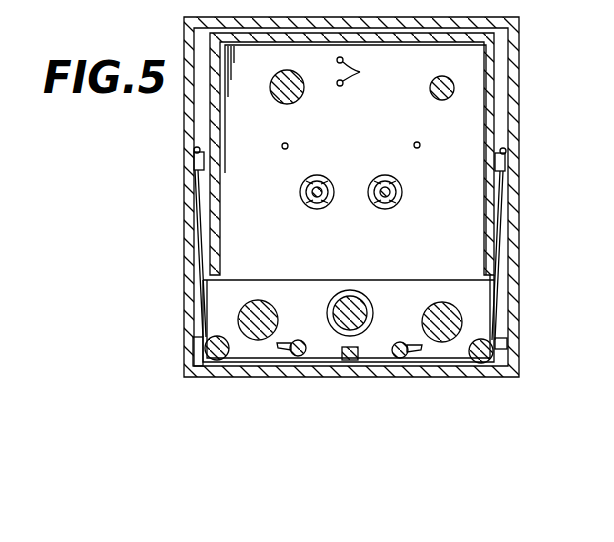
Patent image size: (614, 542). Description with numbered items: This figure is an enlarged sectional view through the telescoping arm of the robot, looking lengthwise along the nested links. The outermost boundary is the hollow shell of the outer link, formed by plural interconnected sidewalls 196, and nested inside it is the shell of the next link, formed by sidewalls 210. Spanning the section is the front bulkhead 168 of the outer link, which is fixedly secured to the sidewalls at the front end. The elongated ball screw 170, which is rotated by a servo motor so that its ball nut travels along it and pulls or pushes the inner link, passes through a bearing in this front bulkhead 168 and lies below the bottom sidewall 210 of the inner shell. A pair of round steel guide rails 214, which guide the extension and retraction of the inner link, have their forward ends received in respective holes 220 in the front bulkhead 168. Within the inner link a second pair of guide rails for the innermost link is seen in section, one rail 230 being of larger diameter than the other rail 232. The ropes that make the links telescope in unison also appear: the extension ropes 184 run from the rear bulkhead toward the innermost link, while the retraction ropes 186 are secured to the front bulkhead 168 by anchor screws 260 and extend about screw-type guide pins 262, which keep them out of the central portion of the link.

The sidewalls 196 is at (498, 20).
The sidewalls 210 is at (484, 86).
The front bulkhead 168 is at (460, 285).
The extension ropes 184 is at (374, 73).
The guide rail 230 is at (300, 101).
The guide rail 232 is at (452, 100).
The retraction ropes 186 is at (414, 145).
The guide pins 262 is at (506, 162).
The hole 220 is at (243, 318).
The guide rails 214 is at (245, 320).
The ball screw 170 is at (378, 276).
The anchor screws 260 is at (387, 358).